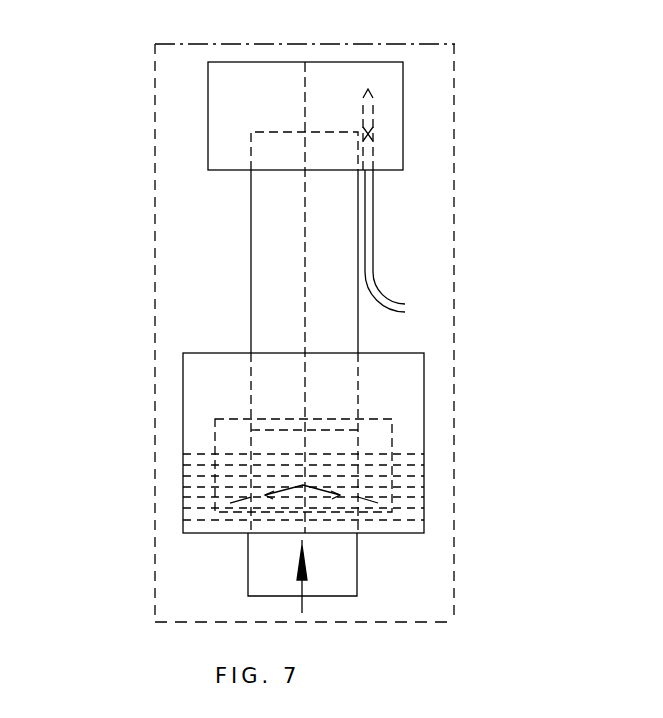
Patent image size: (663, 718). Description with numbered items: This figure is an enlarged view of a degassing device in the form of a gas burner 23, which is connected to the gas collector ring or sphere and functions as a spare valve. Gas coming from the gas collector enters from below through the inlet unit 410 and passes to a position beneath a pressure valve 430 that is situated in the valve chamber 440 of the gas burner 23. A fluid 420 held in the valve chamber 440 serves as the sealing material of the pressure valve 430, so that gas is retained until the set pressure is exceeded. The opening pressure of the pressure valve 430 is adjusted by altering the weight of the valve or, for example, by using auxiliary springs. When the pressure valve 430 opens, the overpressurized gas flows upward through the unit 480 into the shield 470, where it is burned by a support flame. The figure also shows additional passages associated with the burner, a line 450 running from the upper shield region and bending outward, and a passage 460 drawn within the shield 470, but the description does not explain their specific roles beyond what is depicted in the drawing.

The gas burner 23 is at (247, 333).
The unit 410 is at (410, 573).
The fluid 420 is at (378, 475).
The pressure valve 430 is at (395, 445).
The valve chamber 440 is at (379, 419).
The discharge tube 450 is at (472, 241).
The suction passage 460 is at (471, 129).
The shield 470 is at (394, 94).
The unit 480 is at (203, 332).